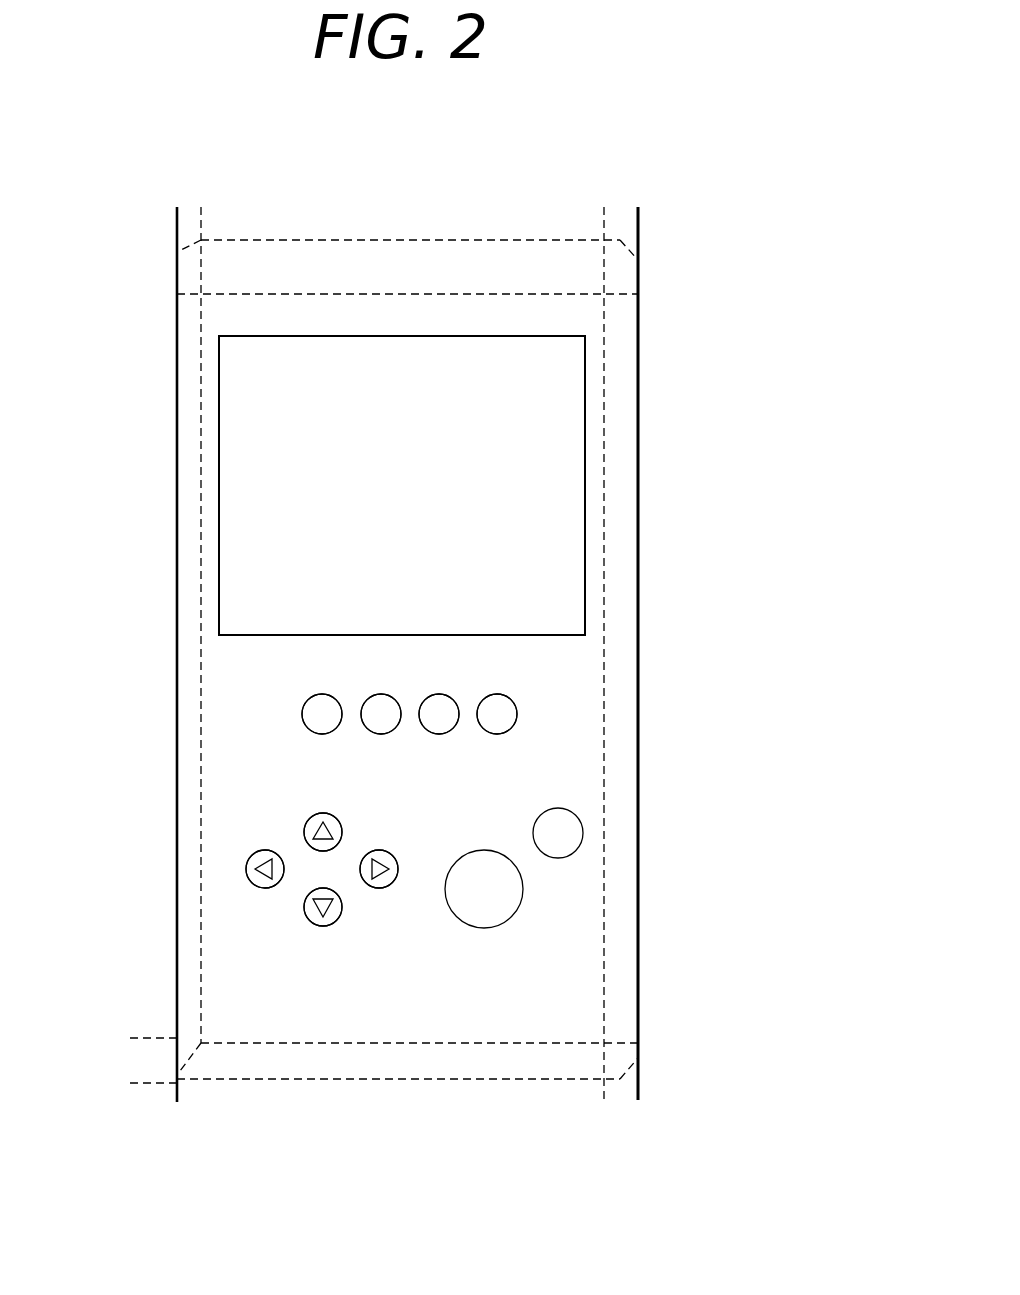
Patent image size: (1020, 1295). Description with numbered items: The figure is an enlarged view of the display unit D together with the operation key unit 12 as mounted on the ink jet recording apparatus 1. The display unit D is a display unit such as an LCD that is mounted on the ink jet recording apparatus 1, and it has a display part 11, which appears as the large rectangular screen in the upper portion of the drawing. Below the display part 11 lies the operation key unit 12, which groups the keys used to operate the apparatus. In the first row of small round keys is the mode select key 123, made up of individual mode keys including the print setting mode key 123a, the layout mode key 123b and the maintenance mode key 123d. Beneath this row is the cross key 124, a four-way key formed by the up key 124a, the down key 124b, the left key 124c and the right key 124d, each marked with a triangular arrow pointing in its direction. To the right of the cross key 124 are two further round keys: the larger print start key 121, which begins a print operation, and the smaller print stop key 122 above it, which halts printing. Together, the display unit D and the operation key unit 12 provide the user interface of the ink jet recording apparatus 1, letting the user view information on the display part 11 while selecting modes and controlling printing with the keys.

The ink jet recording apparatus 1 is at (295, 263).
The display part 11 is at (560, 396).
The display unit D is at (545, 335).
The operation key unit 12 is at (580, 963).
The print start key 121 is at (523, 892).
The print stop key 122 is at (584, 834).
The mode select key 123 is at (410, 691).
The print setting mode key 123a is at (302, 714).
The layout mode key 123b is at (371, 732).
The maintenance mode key 123d is at (517, 714).
The cross key 124 is at (305, 871).
The up key 124a is at (304, 832).
The down key 124b is at (322, 927).
The left key 124c is at (246, 869).
The right key 124d is at (379, 889).